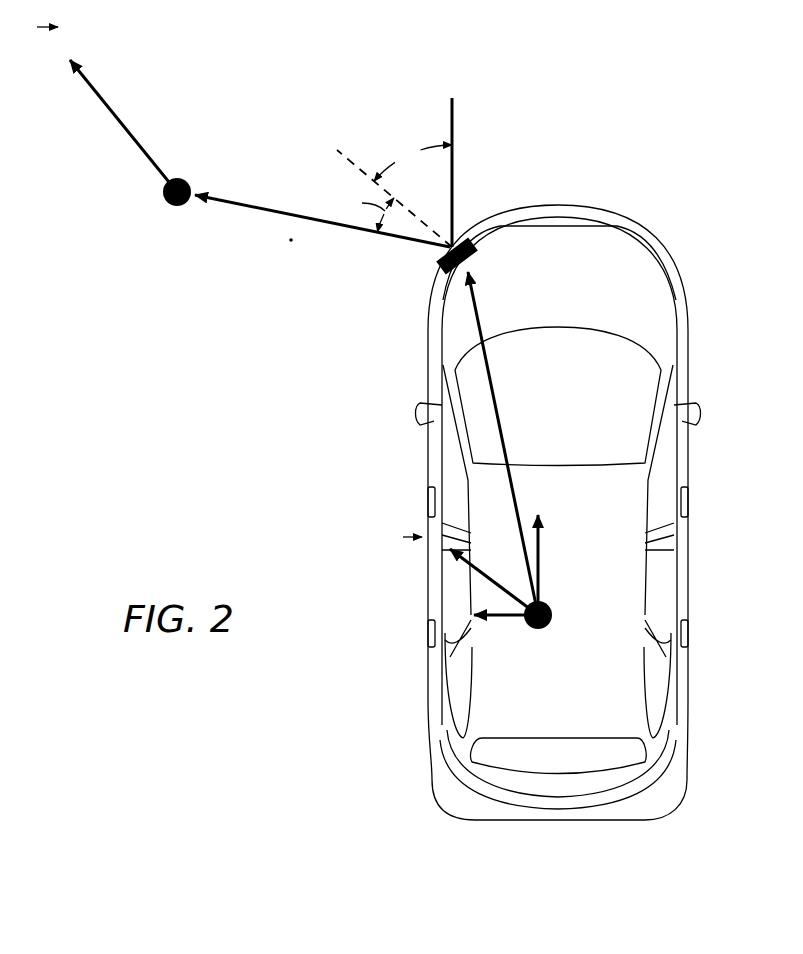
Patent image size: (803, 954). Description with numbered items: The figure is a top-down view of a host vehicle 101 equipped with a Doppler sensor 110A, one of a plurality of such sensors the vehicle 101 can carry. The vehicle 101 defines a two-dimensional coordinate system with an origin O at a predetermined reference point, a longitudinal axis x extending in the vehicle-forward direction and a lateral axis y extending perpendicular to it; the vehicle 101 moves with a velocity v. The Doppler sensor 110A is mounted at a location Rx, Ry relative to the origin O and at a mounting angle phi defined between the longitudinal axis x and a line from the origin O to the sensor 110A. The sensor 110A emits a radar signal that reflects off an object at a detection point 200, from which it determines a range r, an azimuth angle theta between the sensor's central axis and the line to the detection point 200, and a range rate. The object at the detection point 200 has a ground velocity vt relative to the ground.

The host vehicle 101 is at (600, 208).
The Doppler sensor 110A is at (462, 228).
The detection point 200 is at (172, 207).